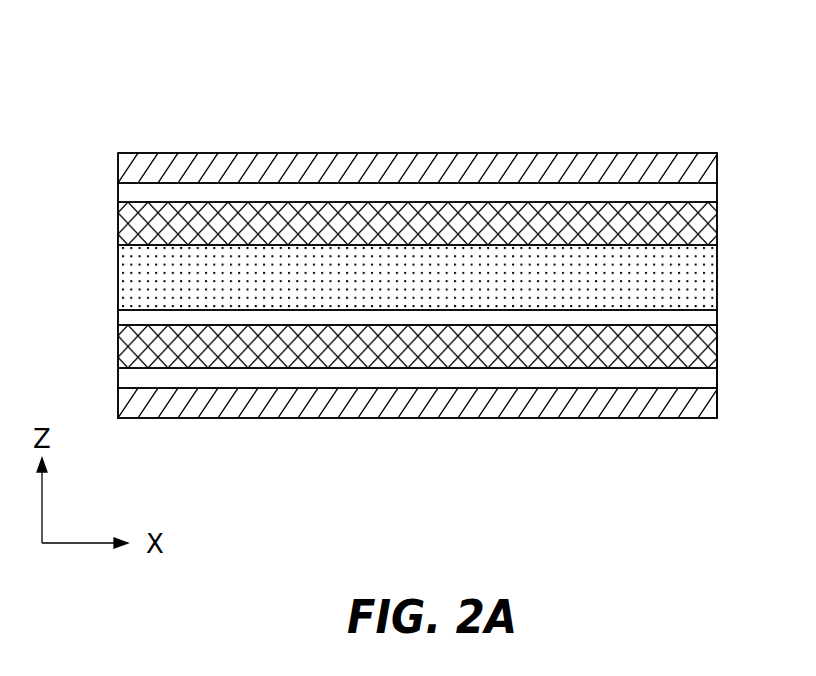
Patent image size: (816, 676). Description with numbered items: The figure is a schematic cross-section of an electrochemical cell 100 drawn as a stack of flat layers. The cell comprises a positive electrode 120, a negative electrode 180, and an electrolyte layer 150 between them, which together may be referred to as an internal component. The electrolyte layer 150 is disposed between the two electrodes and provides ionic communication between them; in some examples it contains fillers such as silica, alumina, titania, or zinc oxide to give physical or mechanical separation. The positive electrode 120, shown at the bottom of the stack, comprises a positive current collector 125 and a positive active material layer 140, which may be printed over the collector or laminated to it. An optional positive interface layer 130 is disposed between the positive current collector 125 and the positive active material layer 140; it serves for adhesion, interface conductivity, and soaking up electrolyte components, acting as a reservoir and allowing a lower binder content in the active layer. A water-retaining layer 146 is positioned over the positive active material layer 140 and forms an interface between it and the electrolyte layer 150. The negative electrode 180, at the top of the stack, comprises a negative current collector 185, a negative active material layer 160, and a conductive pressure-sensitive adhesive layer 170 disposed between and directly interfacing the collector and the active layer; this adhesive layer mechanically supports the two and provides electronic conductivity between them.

The electrochemical cell 100 is at (118, 110).
The positive electrode 120 is at (383, 413).
The positive current collector 125 is at (340, 380).
The positive interface layer 130 is at (485, 372).
The positive active material layer 140 is at (627, 370).
The water-retaining layer 146 is at (700, 367).
The electrolyte layer 150 is at (148, 282).
The negative active material layer 160 is at (692, 213).
The conductive pressure-sensitive adhesive layer 170 is at (402, 190).
The negative electrode 180 is at (418, 151).
The negative current collector 185 is at (320, 153).